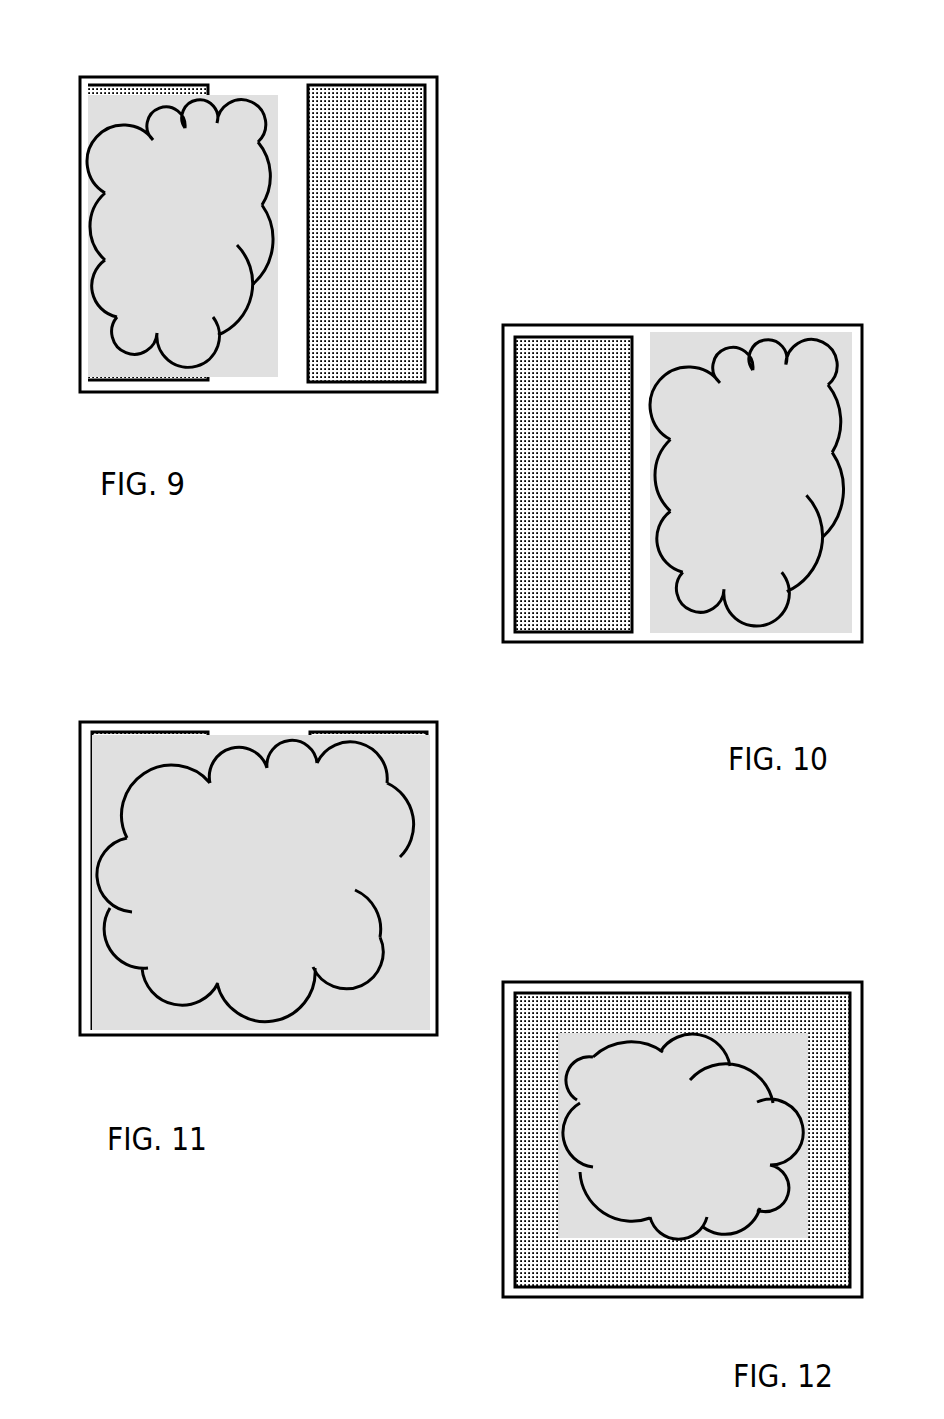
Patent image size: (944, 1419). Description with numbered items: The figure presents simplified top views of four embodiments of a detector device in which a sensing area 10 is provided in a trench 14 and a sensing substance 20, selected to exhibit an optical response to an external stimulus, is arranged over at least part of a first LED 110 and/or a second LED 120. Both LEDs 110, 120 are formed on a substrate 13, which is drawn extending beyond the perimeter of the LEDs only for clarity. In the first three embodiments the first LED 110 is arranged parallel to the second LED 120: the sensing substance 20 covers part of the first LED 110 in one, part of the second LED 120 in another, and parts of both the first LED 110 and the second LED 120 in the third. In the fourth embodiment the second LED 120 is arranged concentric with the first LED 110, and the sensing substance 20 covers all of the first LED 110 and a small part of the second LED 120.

In FIG. 9, the sensing area 10 is at (258, 267).
In FIG. 9, the substrate 13 is at (167, 382).
In FIG. 9, the trench 14 is at (268, 120).
In FIG. 10, the trench 14 is at (657, 363).
In FIG. 11, the trench 14 is at (232, 765).
In FIG. 12, the trench 14 is at (788, 992).
In FIG. 9, the sensing substance 20 is at (232, 183).
In FIG. 10, the sensing substance 20 is at (702, 453).
In FIG. 11, the sensing substance 20 is at (268, 875).
In FIG. 12, the sensing substance 20 is at (515, 1212).
In FIG. 9, the first LED 110 is at (120, 103).
In FIG. 10, the first LED 110 is at (588, 427).
In FIG. 11, the first LED 110 is at (132, 743).
In FIG. 12, the first LED 110 is at (717, 990).
In FIG. 9, the second LED 120 is at (385, 173).
In FIG. 10, the second LED 120 is at (800, 603).
In FIG. 11, the second LED 120 is at (412, 757).
In FIG. 12, the second LED 120 is at (552, 992).